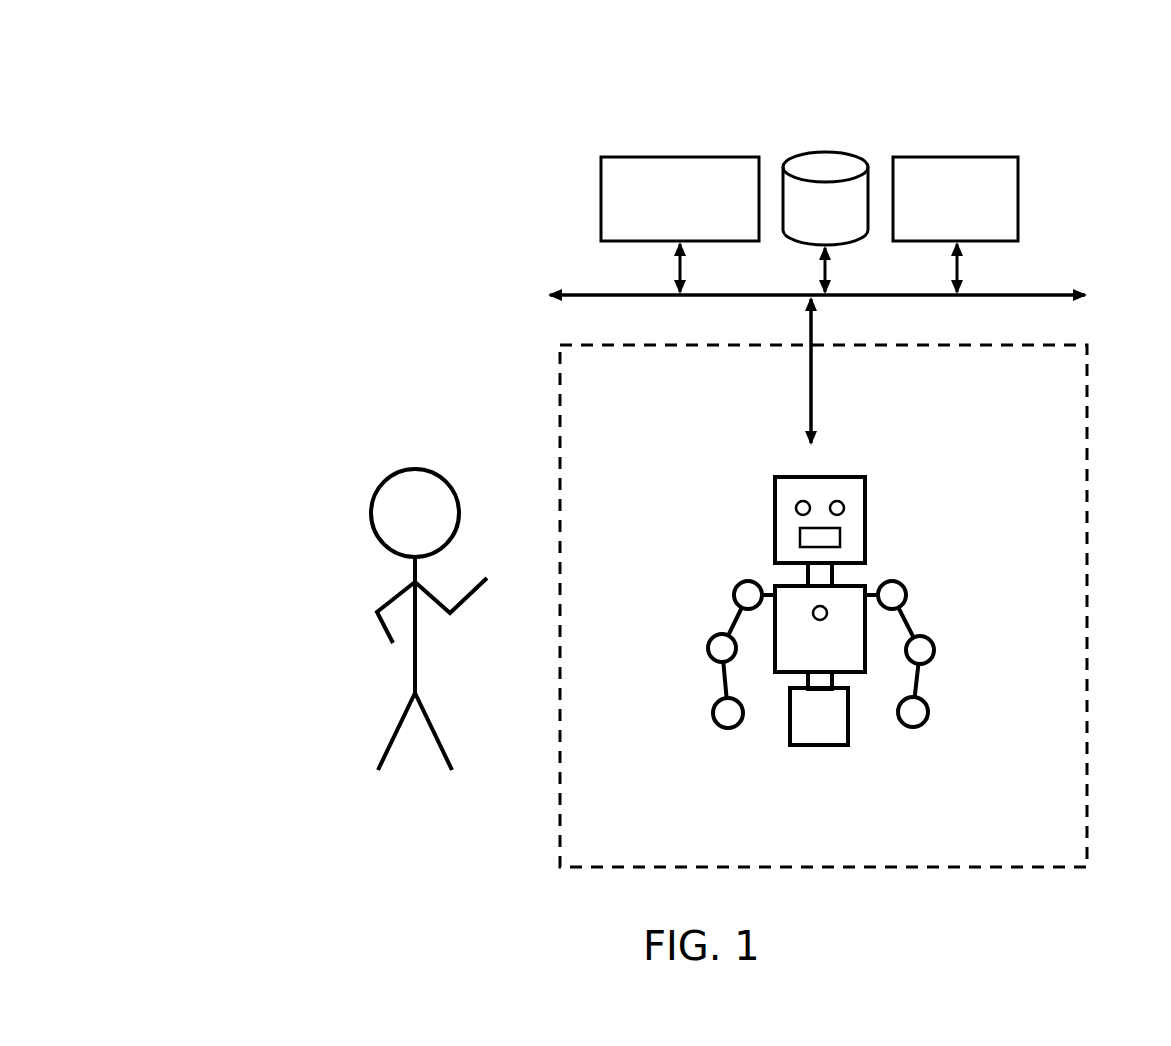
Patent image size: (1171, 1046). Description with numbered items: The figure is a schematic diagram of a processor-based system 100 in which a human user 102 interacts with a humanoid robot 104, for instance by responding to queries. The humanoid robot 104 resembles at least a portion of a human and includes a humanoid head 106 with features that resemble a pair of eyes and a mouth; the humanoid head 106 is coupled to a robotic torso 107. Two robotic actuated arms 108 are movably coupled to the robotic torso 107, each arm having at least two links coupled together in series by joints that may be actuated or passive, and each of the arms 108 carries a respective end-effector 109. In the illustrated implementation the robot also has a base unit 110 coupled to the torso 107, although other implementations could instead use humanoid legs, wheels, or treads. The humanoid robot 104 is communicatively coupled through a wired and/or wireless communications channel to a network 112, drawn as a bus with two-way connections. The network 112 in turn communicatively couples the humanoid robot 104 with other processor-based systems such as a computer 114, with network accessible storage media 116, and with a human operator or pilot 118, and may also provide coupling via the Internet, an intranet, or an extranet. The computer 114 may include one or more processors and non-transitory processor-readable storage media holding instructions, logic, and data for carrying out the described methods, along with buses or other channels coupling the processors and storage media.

The processor-based system 100 is at (338, 120).
The human user 102 is at (372, 455).
The humanoid robot 104 is at (1073, 386).
The humanoid head 106 is at (820, 604).
The robotic torso 107 is at (866, 686).
The robotic actuated arms 108 is at (714, 598).
The end-effector 109 is at (700, 708).
The base unit 110 is at (783, 736).
The network 112 is at (597, 278).
The computer 114 is at (590, 158).
The network accessible storage media 116 is at (871, 147).
The human operator or pilot 118 is at (1042, 211).